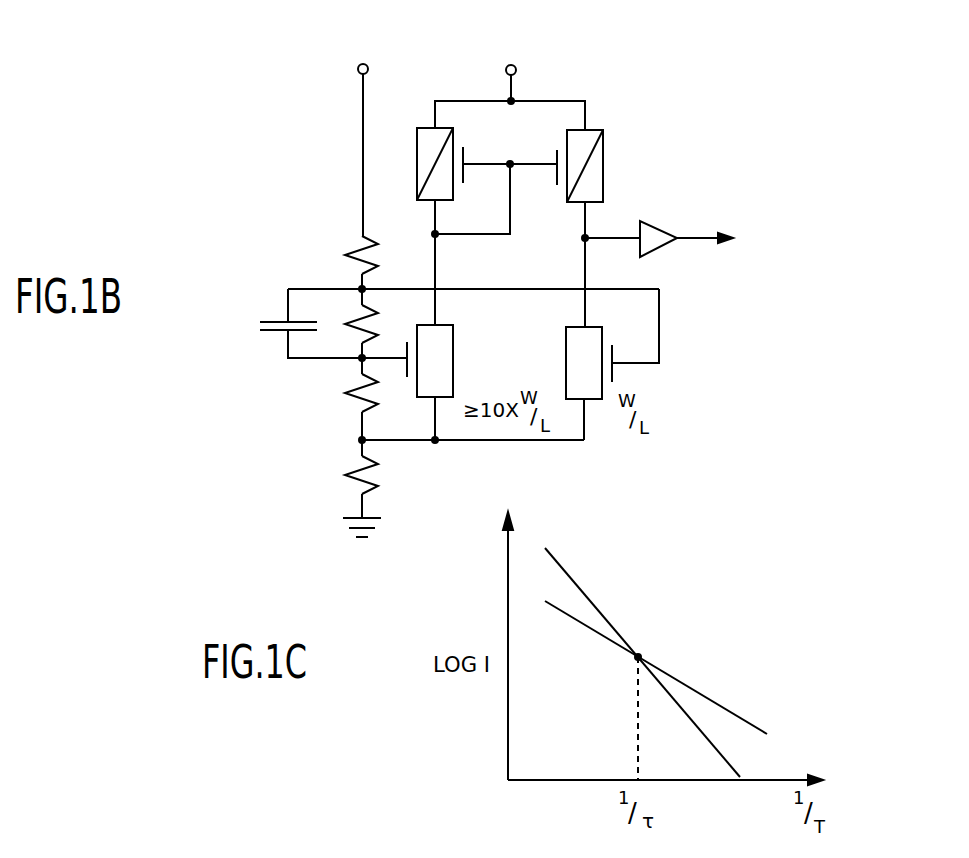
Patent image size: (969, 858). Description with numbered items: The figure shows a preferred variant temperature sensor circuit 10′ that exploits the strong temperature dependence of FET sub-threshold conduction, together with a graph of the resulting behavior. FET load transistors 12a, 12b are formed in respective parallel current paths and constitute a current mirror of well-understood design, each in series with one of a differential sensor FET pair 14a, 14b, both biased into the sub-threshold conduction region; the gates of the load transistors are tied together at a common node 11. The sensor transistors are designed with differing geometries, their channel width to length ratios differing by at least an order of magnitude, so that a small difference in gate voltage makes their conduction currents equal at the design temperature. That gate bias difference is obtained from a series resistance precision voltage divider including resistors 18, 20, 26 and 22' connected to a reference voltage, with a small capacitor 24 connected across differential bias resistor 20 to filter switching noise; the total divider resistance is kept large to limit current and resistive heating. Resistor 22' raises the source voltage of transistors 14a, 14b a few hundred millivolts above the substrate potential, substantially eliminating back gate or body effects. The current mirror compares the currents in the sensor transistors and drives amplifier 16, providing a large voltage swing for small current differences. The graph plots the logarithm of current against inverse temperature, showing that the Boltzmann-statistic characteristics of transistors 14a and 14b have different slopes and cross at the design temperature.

In FIG. 1B, the temperature sensor circuit 10′ is at (606, 76).
In FIG. 1B, the gate connection node 11 is at (510, 205).
In FIG. 1B, the FET load transistor 12a is at (417, 150).
In FIG. 1B, the FET load transistor 12b is at (605, 157).
In FIG. 1B, the sensor FET 14a is at (453, 358).
In FIG. 1C, the sensor FET 14a is at (606, 596).
In FIG. 1B, the sensor FET 14b is at (587, 327).
In FIG. 1C, the sensor FET 14b is at (756, 770).
In FIG. 1B, the amplifier 16 is at (658, 222).
In FIG. 1B, the resistor 18 is at (361, 240).
In FIG. 1B, the differential bias resistor 20 is at (372, 315).
In FIG. 1B, the resistor 22' is at (340, 496).
In FIG. 1B, the capacitor 24 is at (275, 322).
In FIG. 1B, the resistor 26 is at (348, 397).